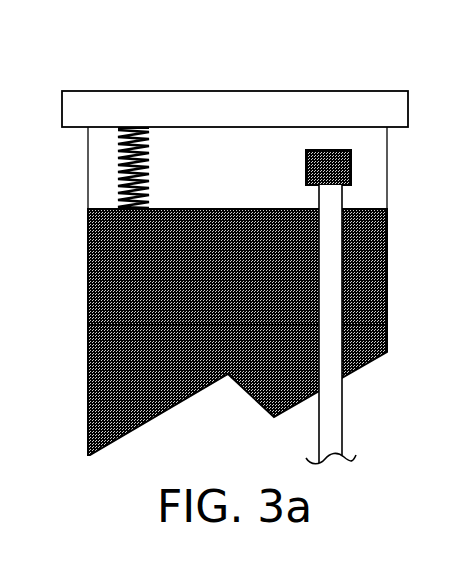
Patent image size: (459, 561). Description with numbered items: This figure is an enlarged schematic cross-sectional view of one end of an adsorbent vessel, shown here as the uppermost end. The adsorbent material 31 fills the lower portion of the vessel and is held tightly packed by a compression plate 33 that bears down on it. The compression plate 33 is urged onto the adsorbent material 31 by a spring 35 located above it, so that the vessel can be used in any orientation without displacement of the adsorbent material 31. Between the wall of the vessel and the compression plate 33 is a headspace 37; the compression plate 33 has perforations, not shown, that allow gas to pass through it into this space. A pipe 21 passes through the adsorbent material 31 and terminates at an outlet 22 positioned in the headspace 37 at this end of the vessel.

The pipe 21 is at (345, 413).
The outlet 22 is at (353, 168).
The adsorbent material 31 is at (104, 303).
The compression plate 33 is at (197, 91).
The spring 35 is at (118, 166).
The headspace 37 is at (216, 179).